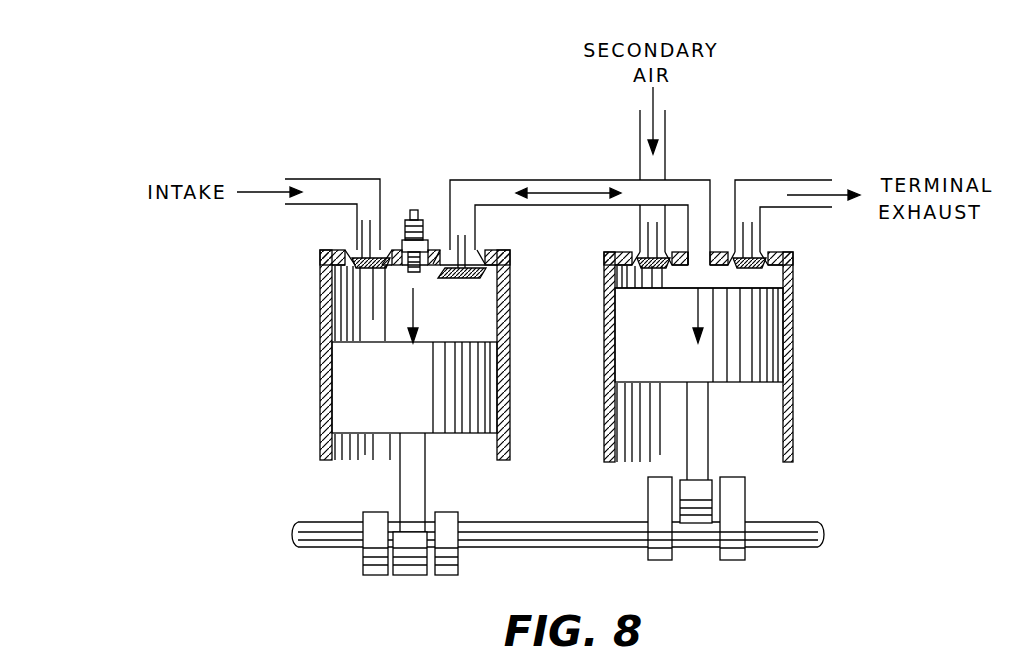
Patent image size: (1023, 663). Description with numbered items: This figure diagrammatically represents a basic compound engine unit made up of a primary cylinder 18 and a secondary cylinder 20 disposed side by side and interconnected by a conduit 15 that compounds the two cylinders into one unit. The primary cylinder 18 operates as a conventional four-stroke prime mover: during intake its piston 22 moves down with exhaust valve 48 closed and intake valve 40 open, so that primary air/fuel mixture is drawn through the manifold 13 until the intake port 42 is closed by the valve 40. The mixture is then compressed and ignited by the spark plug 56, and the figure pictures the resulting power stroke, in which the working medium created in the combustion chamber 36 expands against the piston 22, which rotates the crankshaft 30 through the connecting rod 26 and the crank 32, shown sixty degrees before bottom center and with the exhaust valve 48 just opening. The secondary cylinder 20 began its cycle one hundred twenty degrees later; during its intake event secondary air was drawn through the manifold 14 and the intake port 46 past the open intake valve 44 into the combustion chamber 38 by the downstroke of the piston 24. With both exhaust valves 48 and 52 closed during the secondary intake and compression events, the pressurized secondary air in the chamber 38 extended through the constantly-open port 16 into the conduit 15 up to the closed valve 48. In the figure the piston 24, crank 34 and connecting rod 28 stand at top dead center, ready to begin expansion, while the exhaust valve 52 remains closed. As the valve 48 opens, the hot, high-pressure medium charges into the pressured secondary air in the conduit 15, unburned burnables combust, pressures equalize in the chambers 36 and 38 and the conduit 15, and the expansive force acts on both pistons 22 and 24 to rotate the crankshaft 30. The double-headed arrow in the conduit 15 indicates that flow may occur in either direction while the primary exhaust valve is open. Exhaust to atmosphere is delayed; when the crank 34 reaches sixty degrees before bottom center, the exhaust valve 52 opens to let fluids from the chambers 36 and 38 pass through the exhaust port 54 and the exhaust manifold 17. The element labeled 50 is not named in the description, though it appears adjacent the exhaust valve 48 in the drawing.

The intake manifold 13 is at (316, 179).
The secondary air manifold 14 is at (666, 150).
The conduit 15 is at (503, 180).
The constantly-open port 16 is at (707, 232).
The exhaust manifold 17 is at (795, 180).
The primary cylinder 18 is at (318, 353).
The secondary cylinder 20 is at (793, 350).
The piston 22 is at (363, 410).
The piston 24 is at (730, 363).
The connecting rod 26 is at (427, 481).
The connecting rod 28 is at (707, 420).
The crankshaft 30 is at (295, 547).
The crank 32 is at (459, 557).
The crank 34 is at (746, 501).
The combustion chamber 36 is at (480, 318).
The combustion chamber 38 is at (767, 282).
The intake valve 40 is at (350, 290).
The intake port 42 is at (360, 250).
The intake valve 44 is at (615, 280).
The intake port 46 is at (645, 250).
The exhaust valve 48 is at (468, 282).
The exhaust valve seat 50 is at (470, 261).
The exhaust valve 52 is at (765, 270).
The exhaust port 54 is at (755, 250).
The spark plug 56 is at (405, 230).